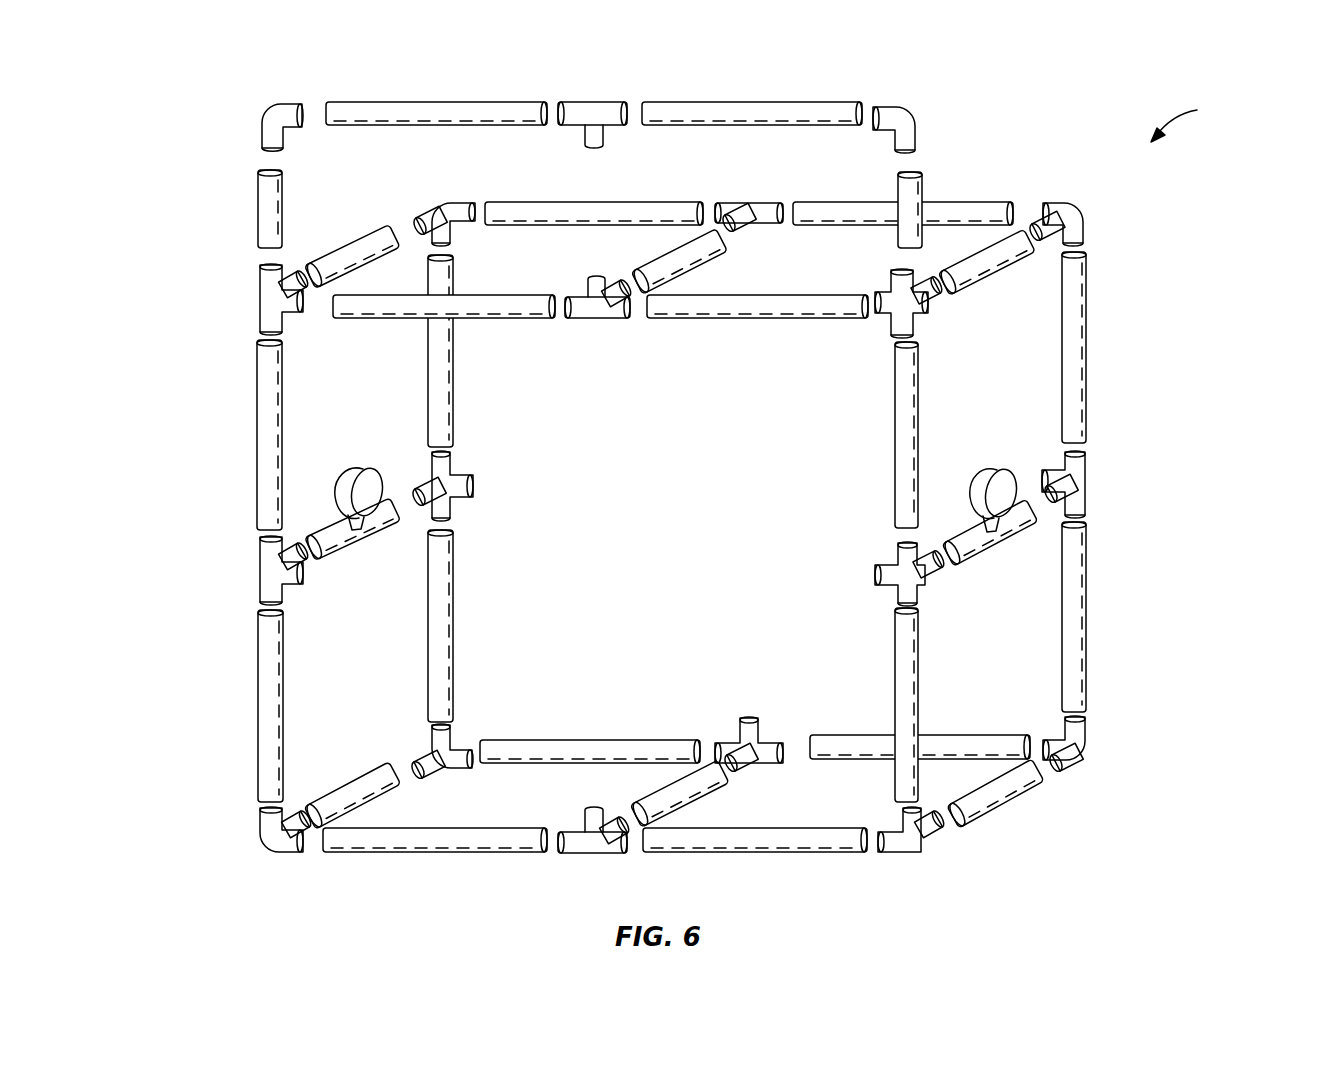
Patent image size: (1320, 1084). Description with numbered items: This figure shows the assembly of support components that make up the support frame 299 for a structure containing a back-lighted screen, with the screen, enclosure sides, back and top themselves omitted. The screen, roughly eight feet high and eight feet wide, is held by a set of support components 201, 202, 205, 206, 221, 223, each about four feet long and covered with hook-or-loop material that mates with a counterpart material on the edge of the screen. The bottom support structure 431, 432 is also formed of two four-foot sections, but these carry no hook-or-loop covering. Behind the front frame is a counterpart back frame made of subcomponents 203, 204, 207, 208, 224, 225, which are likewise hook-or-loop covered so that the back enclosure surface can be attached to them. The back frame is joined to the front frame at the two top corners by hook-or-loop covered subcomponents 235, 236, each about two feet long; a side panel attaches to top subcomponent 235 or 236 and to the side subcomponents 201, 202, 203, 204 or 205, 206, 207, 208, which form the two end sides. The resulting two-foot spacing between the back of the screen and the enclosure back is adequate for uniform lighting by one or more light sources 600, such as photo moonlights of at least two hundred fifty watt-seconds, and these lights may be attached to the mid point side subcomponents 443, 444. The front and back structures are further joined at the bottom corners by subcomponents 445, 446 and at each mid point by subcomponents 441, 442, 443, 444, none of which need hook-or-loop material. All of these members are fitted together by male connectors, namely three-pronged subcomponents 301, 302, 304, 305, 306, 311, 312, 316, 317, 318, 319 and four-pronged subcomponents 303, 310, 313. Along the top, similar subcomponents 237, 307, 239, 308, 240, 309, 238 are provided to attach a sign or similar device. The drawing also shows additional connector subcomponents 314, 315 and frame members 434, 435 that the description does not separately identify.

The support frame 299 is at (1202, 121).
The support component 201 is at (260, 698).
The support component 202 is at (262, 432).
The back frame subcomponent 203 is at (443, 615).
The back frame subcomponent 204 is at (432, 345).
The support component 205 is at (902, 677).
The support component 206 is at (900, 437).
The back frame subcomponent 207 is at (1077, 615).
The back frame subcomponent 208 is at (1085, 360).
The support component 221 is at (490, 313).
The support component 223 is at (775, 317).
The back frame subcomponent 224 is at (876, 203).
The back frame subcomponent 225 is at (605, 203).
The top corner subcomponent 235 is at (345, 242).
The top corner subcomponent 236 is at (1005, 253).
The sign attachment subcomponent 237 is at (260, 207).
The sign attachment subcomponent 238 is at (920, 190).
The sign attachment subcomponent 239 is at (430, 102).
The sign attachment subcomponent 240 is at (735, 101).
The three-pronged male subcomponent 301 is at (262, 565).
The three-pronged male subcomponent 302 is at (433, 467).
The four-pronged male subcomponent 303 is at (608, 307).
The three-pronged male subcomponent 304 is at (750, 205).
The three-pronged male subcomponent 305 is at (875, 573).
The three-pronged male subcomponent 306 is at (1080, 482).
The sign attachment subcomponent 307 is at (258, 127).
The sign attachment subcomponent 308 is at (583, 102).
The sign attachment subcomponent 309 is at (890, 112).
The four-pronged male subcomponent 310 is at (260, 302).
The three-pronged male subcomponent 311 is at (450, 203).
The three-pronged male subcomponent 312 is at (1075, 220).
The four-pronged male subcomponent 313 is at (920, 300).
The elbow fitting 314 is at (260, 832).
The three-way corner fitting 315 is at (432, 743).
The three-pronged male subcomponent 316 is at (590, 850).
The three-pronged male subcomponent 317 is at (730, 743).
The three-pronged male subcomponent 318 is at (907, 842).
The three-pronged male subcomponent 319 is at (1070, 752).
The bottom support structure section 431 is at (423, 838).
The bottom support structure section 432 is at (770, 840).
The horizontal pipe segment 434 is at (937, 737).
The horizontal pipe segment 435 is at (585, 740).
The mid point subcomponent 441 is at (663, 797).
The mid point subcomponent 442 is at (652, 262).
The mid point side subcomponent 443 is at (337, 553).
The mid point side subcomponent 444 is at (983, 543).
The bottom corner subcomponent 445 is at (345, 792).
The bottom corner subcomponent 446 is at (1005, 793).
The light source 600 is at (355, 474).